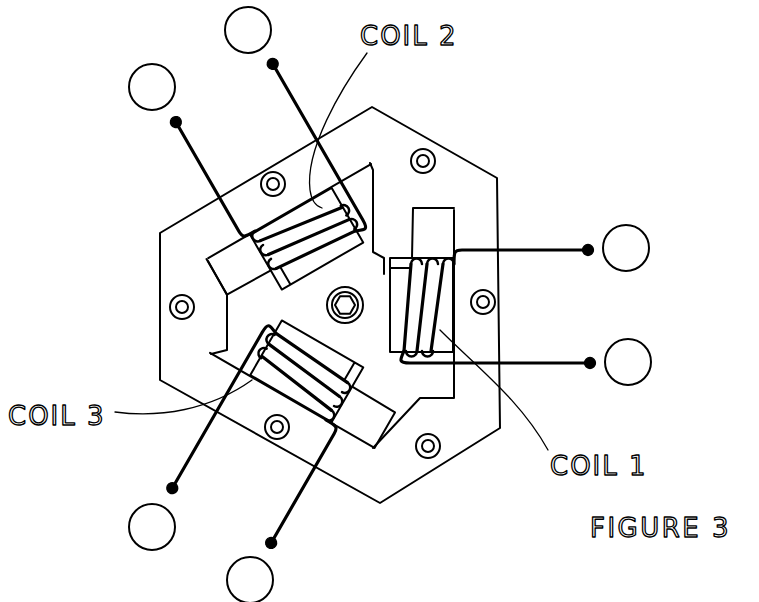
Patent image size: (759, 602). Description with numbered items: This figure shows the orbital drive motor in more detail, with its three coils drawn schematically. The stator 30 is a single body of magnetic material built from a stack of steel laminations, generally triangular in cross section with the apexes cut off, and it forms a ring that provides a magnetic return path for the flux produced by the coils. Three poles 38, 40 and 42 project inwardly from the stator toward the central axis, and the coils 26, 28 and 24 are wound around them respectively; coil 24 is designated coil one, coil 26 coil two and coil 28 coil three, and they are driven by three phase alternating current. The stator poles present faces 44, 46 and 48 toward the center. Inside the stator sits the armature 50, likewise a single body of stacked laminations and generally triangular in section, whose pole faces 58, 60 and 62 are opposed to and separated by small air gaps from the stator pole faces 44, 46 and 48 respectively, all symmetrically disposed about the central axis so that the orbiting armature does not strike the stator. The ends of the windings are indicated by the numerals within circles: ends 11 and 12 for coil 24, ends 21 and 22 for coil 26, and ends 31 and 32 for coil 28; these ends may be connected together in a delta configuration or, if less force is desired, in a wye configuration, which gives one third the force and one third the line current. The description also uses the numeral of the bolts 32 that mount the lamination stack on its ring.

The stator 30 is at (433, 470).
The stator pole 42 is at (397, 257).
The armature 50 is at (413, 208).
The coil 24 is at (427, 257).
The stator pole face 46 is at (388, 290).
The armature pole face 60 is at (385, 337).
The winding end 12 is at (551, 248).
The winding end 11 is at (526, 362).
The armature pole face 62 is at (337, 180).
The stator pole face 48 is at (262, 237).
The coil 26 is at (258, 255).
The stator pole 38 is at (236, 292).
The winding end 22 is at (236, 307).
The winding end 21 is at (221, 253).
The armature pole face 58 is at (268, 387).
The stator pole face 44 is at (340, 405).
The coil 28 is at (345, 390).
The stator pole 40 is at (367, 390).
The bolt 32 is at (220, 356).
The winding end 31 is at (250, 303).